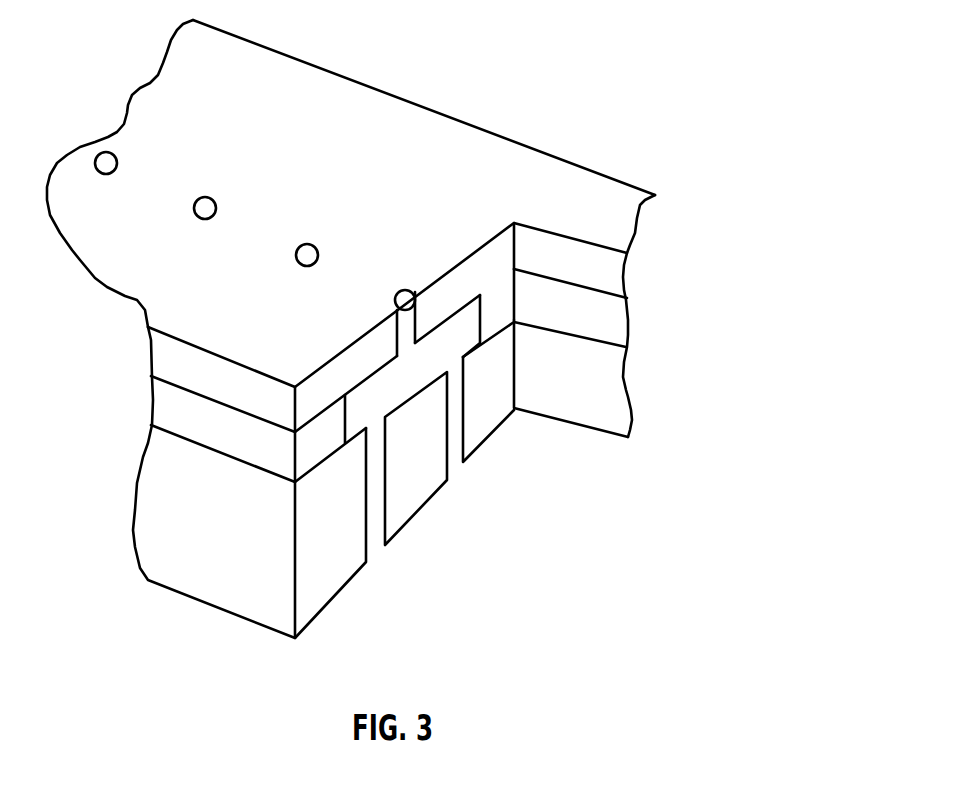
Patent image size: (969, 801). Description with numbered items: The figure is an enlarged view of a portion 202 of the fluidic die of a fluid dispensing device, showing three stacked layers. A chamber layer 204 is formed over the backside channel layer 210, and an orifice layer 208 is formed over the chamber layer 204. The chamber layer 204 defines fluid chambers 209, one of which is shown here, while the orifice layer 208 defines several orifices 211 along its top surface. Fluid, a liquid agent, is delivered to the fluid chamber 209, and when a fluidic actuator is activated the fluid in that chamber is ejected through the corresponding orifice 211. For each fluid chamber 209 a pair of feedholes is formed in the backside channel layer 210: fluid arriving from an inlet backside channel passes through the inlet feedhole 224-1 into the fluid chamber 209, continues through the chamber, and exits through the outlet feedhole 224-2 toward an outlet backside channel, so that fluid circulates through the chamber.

The portion of the fluidic die 202 is at (758, 190).
The chamber layer 204 is at (160, 405).
The orifice layer 208 is at (160, 353).
The fluid chamber 209 is at (365, 403).
The backside channel layer 210 is at (208, 588).
The orifice 211 is at (102, 152).
The inlet feedhole 224-1 is at (378, 556).
The outlet feedhole 224-2 is at (457, 468).